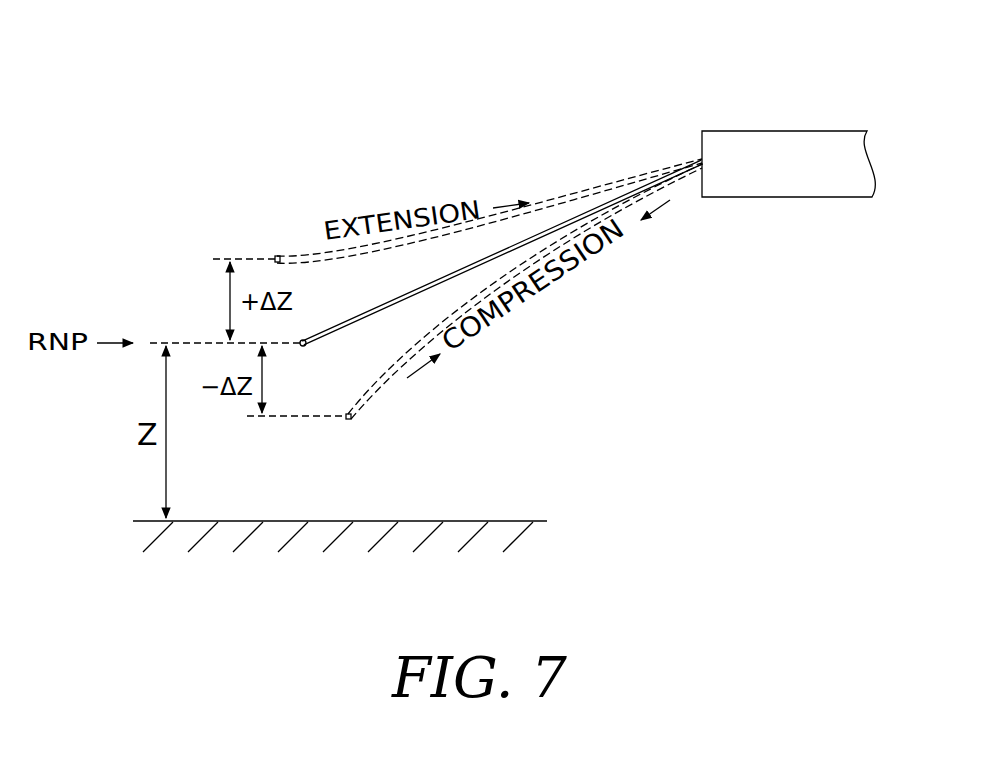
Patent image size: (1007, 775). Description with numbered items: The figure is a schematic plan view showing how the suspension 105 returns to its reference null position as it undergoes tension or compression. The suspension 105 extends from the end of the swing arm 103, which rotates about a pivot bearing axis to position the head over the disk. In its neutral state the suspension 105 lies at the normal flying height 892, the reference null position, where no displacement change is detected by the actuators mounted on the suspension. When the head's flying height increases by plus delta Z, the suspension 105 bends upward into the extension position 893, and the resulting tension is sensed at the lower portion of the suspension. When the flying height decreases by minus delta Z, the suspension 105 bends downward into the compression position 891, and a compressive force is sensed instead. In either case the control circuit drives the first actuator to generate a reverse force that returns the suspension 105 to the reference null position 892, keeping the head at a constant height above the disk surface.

The swing arm 103 is at (787, 141).
The suspension 105 is at (538, 210).
The decreased flying height position 891 is at (351, 420).
The normal flying height (reference null position) 892 is at (306, 347).
The increased flying height position 893 is at (277, 256).